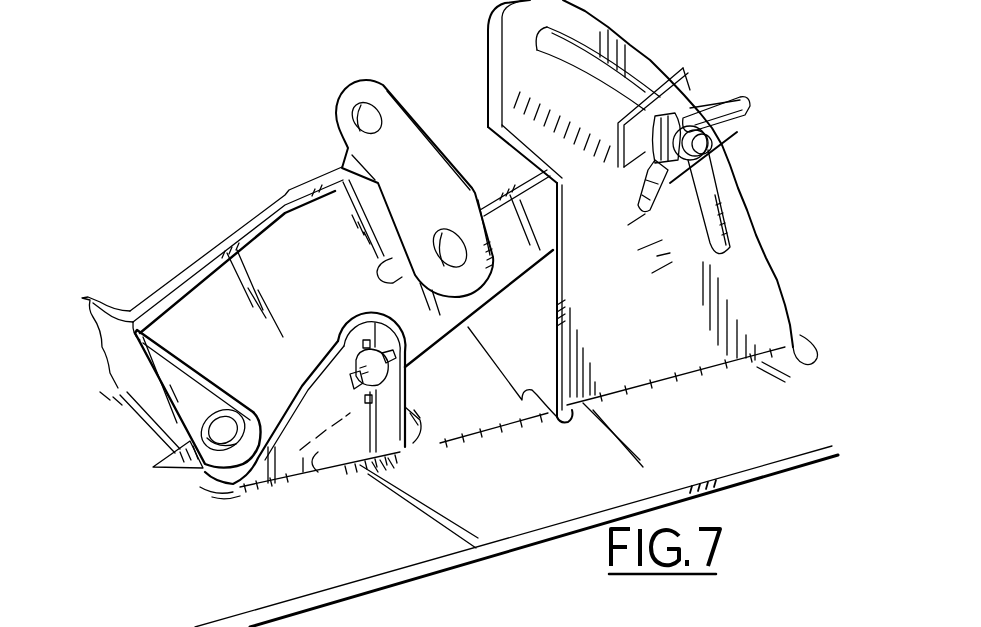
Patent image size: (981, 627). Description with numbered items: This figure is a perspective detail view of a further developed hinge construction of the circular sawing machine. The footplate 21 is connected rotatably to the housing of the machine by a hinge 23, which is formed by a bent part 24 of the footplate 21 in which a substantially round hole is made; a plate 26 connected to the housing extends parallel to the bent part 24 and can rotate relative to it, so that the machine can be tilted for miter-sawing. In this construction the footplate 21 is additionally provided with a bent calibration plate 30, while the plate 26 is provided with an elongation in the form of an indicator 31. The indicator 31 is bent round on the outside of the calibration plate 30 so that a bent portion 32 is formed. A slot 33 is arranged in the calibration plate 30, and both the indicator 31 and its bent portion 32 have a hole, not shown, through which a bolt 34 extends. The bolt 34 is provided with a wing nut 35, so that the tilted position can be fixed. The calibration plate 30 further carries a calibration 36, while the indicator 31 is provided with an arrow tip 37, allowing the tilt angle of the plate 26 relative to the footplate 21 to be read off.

The footplate 21 is at (752, 455).
The hinge 23 is at (398, 452).
The bent part 24 is at (322, 458).
The plate 26 is at (420, 343).
The calibration plate 30 is at (770, 298).
The indicator 31 is at (487, 205).
The bent portion 32 is at (700, 75).
The slot 33 is at (700, 210).
The bolt 34 is at (713, 153).
The wing nut 35 is at (738, 95).
The calibration 36 is at (665, 268).
The arrow tip 37 is at (640, 183).